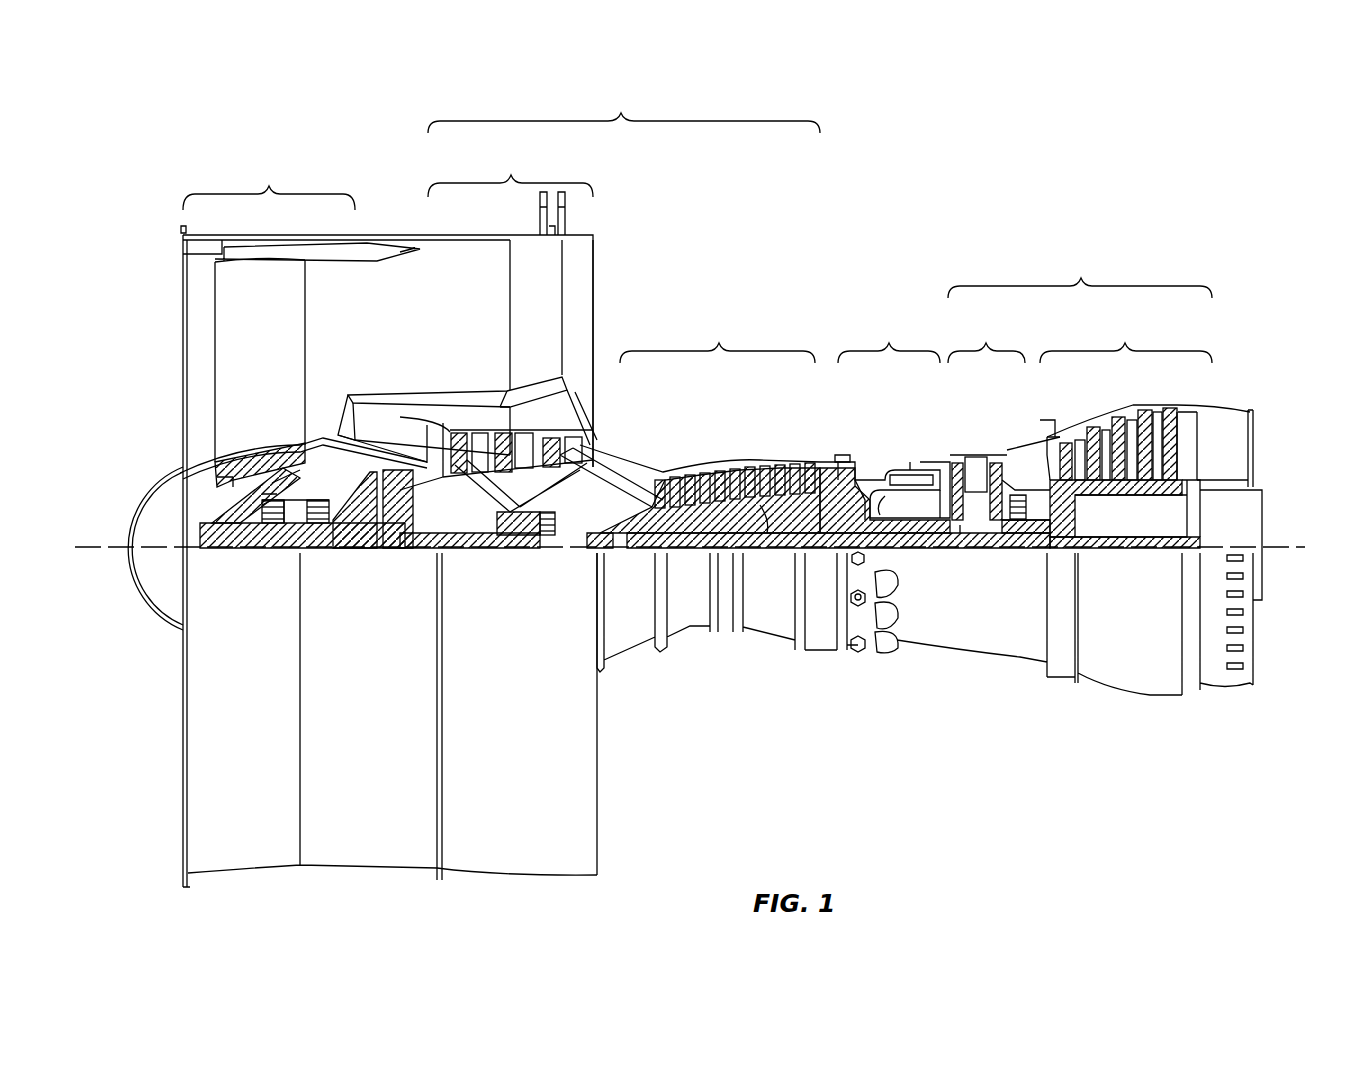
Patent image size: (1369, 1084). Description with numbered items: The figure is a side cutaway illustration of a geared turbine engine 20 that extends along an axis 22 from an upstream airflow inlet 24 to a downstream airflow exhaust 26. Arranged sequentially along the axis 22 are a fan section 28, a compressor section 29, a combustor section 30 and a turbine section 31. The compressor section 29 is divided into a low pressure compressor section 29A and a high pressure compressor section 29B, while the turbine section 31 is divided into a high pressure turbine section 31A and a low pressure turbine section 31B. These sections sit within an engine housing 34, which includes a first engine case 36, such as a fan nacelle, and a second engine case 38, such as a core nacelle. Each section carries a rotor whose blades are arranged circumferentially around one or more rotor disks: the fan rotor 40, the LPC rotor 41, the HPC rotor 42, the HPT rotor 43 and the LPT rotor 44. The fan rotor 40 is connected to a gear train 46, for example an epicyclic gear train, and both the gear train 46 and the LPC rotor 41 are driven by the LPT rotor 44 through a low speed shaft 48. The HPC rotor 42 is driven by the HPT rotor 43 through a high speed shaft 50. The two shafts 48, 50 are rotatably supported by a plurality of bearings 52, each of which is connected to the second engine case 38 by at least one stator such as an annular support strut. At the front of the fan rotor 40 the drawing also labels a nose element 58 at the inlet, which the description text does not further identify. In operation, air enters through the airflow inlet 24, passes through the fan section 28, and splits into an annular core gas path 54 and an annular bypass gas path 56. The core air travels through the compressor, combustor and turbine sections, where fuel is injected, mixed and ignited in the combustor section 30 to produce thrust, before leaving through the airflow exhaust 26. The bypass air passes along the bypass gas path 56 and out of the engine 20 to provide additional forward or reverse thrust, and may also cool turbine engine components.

The geared turbine engine 20 is at (133, 200).
The axis 22 is at (1293, 530).
The airflow inlet 24 is at (183, 284).
The airflow exhaust 26 is at (1255, 443).
The fan section 28 is at (269, 308).
The compressor section 29 is at (624, 107).
The low pressure compressor section 29A is at (496, 308).
The high pressure compressor section 29B is at (818, 429).
The combustor section 30 is at (885, 423).
The turbine section 31 is at (1080, 267).
The high pressure turbine section 31A is at (1004, 423).
The low pressure turbine section 31B is at (1145, 425).
The engine housing 34 is at (625, 693).
The first engine case 36 is at (525, 878).
The second engine case 38 is at (820, 645).
The fan rotor 40 is at (255, 478).
The LPC rotor 41 is at (500, 495).
The HPC rotor 42 is at (767, 510).
The HPT rotor 43 is at (975, 527).
The LPT rotor 44 is at (1123, 490).
The gear train 46 is at (393, 552).
The low speed shaft 48 is at (1133, 543).
The high speed shaft 50 is at (907, 530).
The bearings 52 is at (270, 515).
The core gas path 54 is at (614, 470).
The bypass gas path 56 is at (414, 335).
The spinner 58 is at (140, 605).